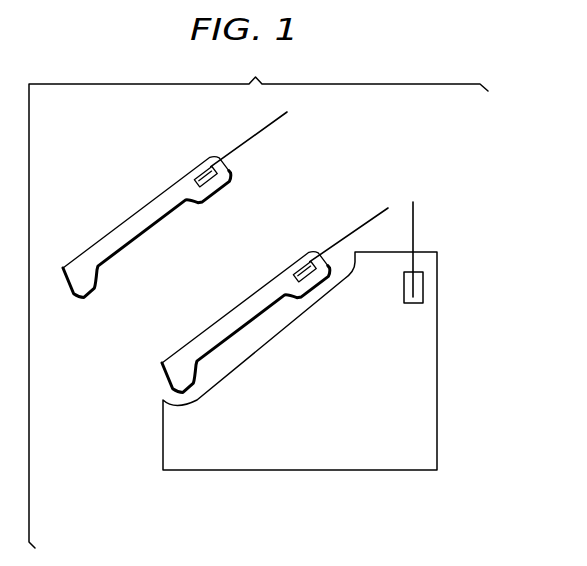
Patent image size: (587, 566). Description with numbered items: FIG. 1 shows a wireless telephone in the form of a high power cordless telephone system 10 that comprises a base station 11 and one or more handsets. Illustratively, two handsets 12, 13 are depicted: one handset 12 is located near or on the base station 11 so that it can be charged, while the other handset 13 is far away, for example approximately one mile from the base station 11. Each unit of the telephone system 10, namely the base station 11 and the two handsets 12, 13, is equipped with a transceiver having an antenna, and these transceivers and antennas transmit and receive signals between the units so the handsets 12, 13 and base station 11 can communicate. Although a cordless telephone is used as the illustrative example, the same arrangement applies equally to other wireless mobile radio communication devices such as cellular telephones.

The cordless telephone system 10 is at (170, 497).
The base station 11 is at (430, 460).
The handset 12 is at (182, 356).
The handset 13 is at (93, 252).